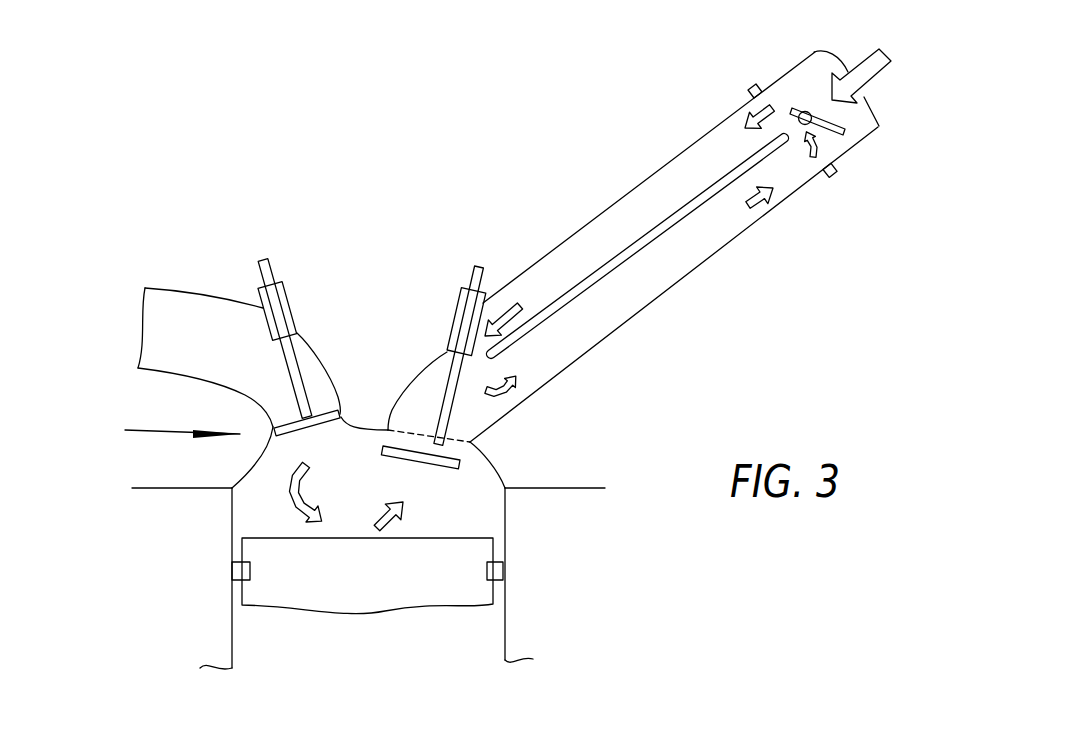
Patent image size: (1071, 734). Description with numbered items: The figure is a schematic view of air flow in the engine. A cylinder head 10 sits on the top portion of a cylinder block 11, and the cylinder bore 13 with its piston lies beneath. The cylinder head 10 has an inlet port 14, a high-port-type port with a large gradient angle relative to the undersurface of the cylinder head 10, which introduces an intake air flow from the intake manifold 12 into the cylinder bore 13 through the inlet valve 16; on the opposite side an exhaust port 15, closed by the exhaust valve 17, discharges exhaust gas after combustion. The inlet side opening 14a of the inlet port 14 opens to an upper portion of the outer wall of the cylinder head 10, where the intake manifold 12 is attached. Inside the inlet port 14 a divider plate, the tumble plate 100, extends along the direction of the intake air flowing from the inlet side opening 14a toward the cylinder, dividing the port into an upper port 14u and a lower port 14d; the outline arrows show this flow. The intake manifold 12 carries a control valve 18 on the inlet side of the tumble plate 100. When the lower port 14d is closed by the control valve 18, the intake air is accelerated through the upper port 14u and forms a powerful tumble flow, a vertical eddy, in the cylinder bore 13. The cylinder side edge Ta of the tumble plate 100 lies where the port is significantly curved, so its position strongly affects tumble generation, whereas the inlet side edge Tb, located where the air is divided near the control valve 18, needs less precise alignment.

The cylinder head 10 is at (110, 445).
The cylinder block 11 is at (187, 558).
The intake manifold 12 is at (860, 143).
The cylinder bore 13 is at (372, 490).
The inlet port 14 is at (676, 149).
The upper port 14u is at (570, 267).
The lower port 14d is at (628, 297).
The inlet side opening 14a is at (802, 186).
The exhaust port 15 is at (168, 295).
The inlet valve 16 is at (387, 410).
The exhaust valve 17 is at (325, 407).
The control valve 18 is at (800, 112).
The tumble plate 100 is at (701, 160).
The cylinder side edge Ta is at (505, 371).
The inlet side edge Tb is at (785, 138).